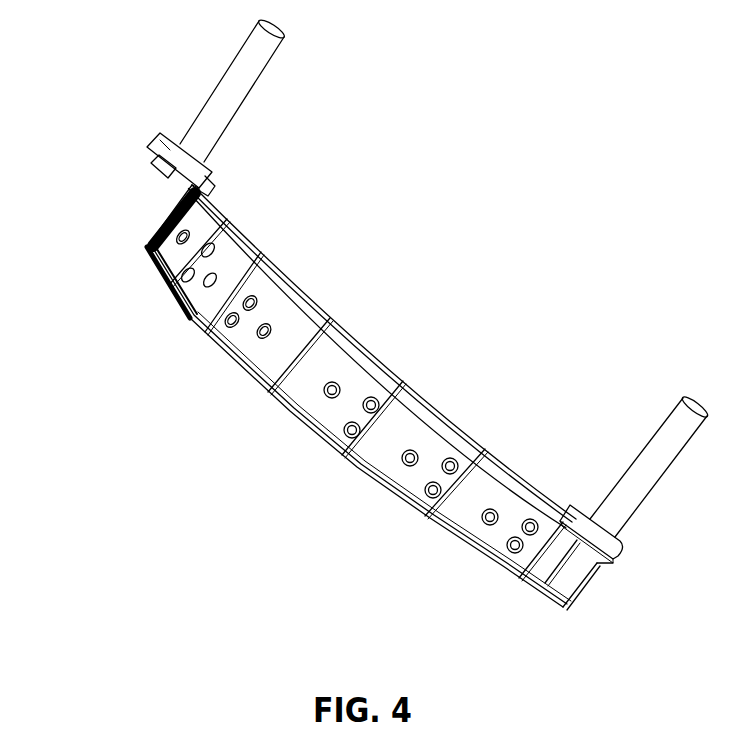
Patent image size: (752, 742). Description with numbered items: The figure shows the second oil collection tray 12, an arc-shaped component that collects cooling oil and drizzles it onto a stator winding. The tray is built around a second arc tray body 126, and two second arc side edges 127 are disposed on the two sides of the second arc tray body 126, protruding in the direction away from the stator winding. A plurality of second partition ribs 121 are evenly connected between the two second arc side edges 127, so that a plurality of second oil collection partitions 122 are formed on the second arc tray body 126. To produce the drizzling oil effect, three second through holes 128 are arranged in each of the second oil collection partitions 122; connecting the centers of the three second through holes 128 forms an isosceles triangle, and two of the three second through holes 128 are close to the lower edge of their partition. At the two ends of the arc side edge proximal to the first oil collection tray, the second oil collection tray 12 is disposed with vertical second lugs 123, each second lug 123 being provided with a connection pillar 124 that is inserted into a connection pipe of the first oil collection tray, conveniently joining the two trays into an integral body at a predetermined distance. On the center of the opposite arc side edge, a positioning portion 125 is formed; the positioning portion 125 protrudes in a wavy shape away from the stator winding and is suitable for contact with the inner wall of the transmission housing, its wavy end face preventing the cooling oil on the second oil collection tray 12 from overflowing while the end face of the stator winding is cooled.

The second oil collection tray 12 is at (147, 67).
The second partition ribs 121 is at (543, 477).
The second oil collection partitions 122 is at (407, 423).
The second lugs 123 is at (212, 178).
The connection pillar 124 is at (218, 77).
The positioning portion 125 is at (303, 420).
The second arc tray body 126 is at (278, 332).
The second arc side edges 127 is at (183, 196).
The second through holes 128 is at (407, 397).